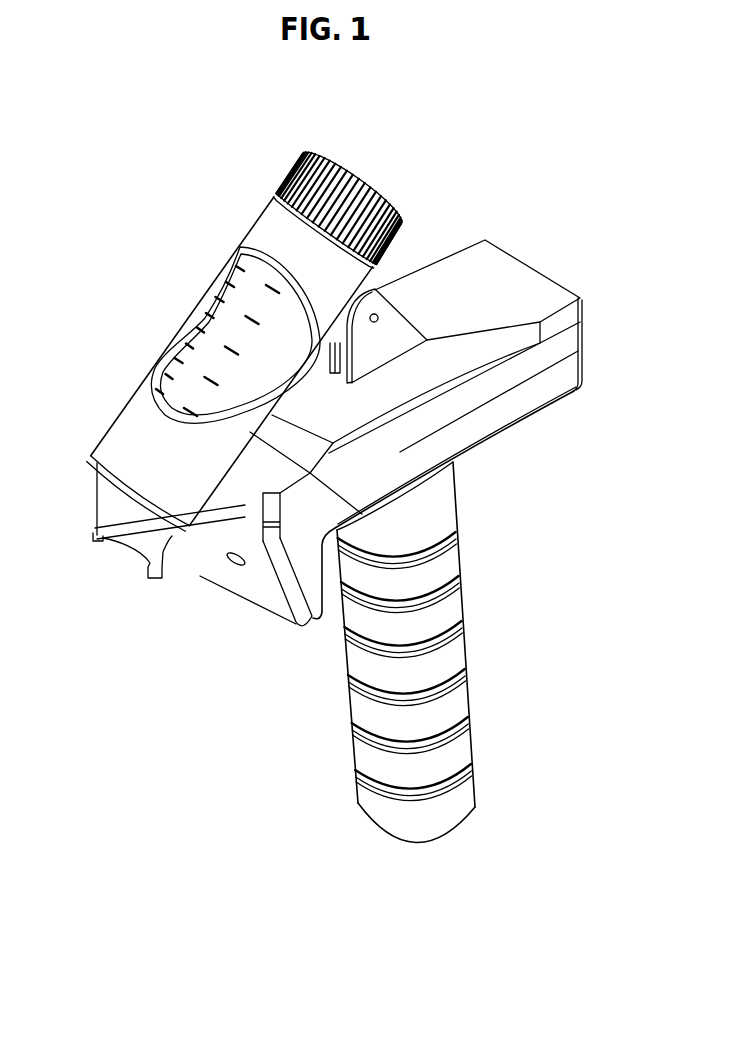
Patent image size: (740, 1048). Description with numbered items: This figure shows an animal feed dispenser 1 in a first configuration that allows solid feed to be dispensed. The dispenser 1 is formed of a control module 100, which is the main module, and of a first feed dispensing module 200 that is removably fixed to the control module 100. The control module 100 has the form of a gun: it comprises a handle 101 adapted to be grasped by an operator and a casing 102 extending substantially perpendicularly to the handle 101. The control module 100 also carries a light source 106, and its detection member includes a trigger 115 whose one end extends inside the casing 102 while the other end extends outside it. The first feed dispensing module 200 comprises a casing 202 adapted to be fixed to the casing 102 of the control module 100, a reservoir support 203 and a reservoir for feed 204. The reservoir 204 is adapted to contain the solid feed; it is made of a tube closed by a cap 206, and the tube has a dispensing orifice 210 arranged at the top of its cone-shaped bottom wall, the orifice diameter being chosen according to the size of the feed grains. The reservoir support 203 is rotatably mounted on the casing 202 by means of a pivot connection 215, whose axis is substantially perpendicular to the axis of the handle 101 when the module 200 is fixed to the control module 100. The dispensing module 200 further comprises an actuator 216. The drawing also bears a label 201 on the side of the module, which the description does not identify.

The animal feed dispenser 1 is at (113, 239).
The control module 100 is at (490, 456).
The handle 101 is at (472, 631).
The casing 102 is at (523, 404).
The light source 106 is at (230, 568).
The trigger 115 is at (187, 547).
The first feed dispensing module 200 is at (422, 261).
The holder body side face 201 is at (560, 333).
The casing 202 is at (445, 300).
The reservoir support 203 is at (277, 227).
The reservoir for feed 204 is at (208, 315).
The cap 206 is at (350, 173).
The dispensing orifice 210 is at (104, 548).
The pivot connection 215 is at (383, 320).
The actuator 216 is at (242, 486).